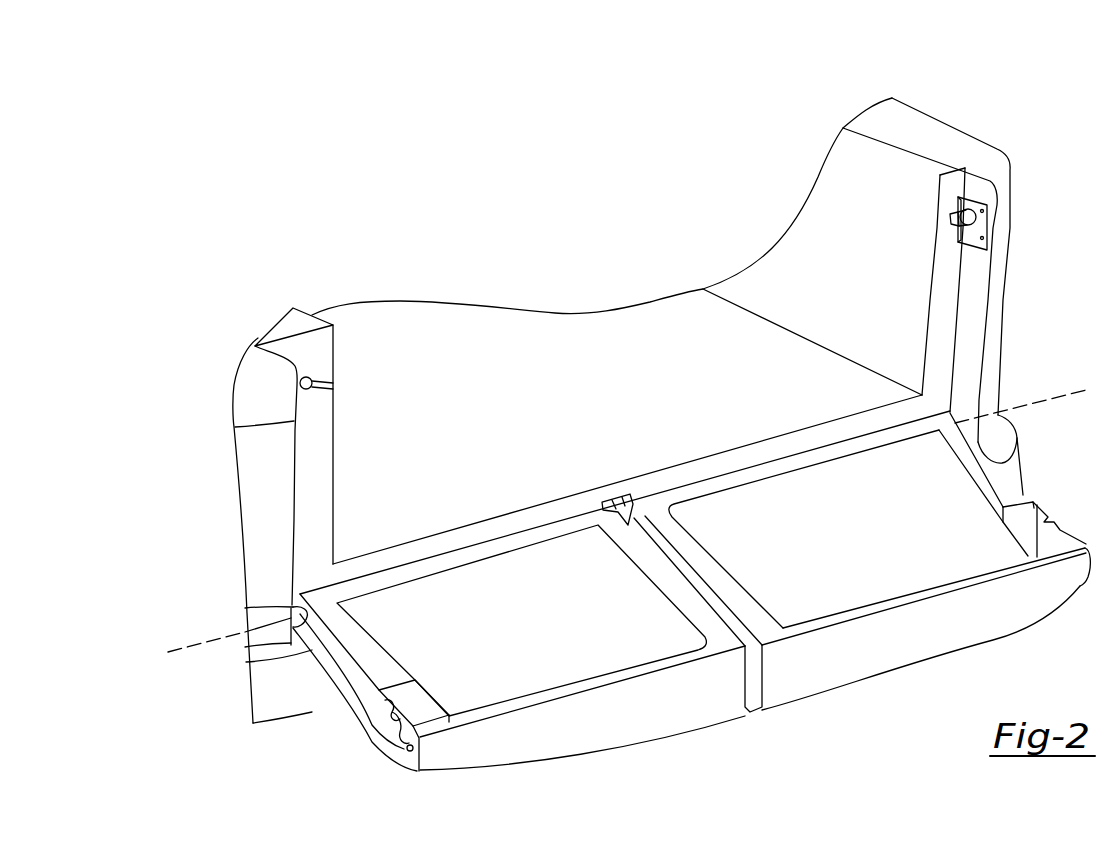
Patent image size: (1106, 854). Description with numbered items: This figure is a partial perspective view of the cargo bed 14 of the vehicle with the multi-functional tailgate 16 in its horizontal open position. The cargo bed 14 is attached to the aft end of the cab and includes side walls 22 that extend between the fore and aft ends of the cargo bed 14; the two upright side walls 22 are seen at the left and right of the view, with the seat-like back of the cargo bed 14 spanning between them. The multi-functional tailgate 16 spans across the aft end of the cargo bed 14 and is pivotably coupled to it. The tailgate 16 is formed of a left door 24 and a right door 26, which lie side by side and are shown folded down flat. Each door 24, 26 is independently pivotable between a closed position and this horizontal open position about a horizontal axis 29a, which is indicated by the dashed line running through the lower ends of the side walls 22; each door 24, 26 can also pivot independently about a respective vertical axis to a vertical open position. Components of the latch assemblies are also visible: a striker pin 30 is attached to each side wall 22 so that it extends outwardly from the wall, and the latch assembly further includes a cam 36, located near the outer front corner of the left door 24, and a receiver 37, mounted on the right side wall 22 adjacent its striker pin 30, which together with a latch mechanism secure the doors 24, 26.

The cargo bed 14 is at (712, 270).
The multi-functional tailgate 16 is at (808, 727).
The side walls 22 is at (256, 382).
The left door 24 is at (615, 723).
The right door 26 is at (937, 628).
The horizontal axis 29a is at (1067, 389).
The striker pin 30 is at (318, 384).
The cam 36 is at (390, 738).
The receiver 37 is at (990, 223).